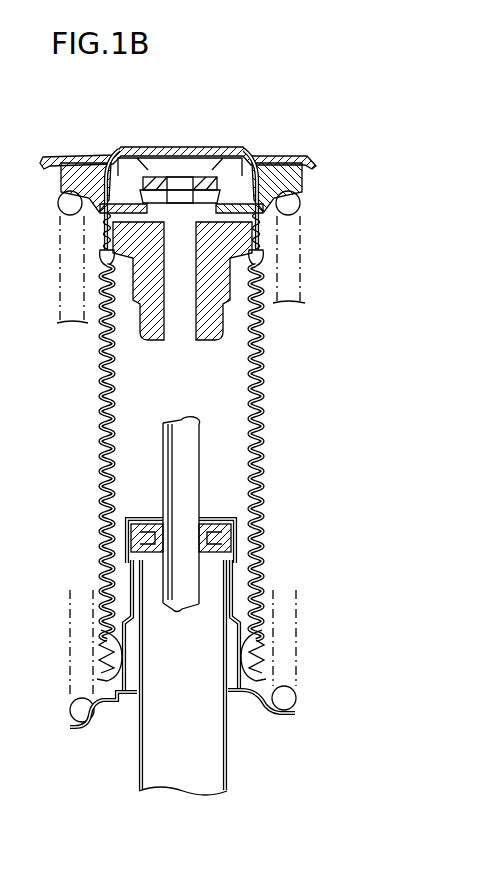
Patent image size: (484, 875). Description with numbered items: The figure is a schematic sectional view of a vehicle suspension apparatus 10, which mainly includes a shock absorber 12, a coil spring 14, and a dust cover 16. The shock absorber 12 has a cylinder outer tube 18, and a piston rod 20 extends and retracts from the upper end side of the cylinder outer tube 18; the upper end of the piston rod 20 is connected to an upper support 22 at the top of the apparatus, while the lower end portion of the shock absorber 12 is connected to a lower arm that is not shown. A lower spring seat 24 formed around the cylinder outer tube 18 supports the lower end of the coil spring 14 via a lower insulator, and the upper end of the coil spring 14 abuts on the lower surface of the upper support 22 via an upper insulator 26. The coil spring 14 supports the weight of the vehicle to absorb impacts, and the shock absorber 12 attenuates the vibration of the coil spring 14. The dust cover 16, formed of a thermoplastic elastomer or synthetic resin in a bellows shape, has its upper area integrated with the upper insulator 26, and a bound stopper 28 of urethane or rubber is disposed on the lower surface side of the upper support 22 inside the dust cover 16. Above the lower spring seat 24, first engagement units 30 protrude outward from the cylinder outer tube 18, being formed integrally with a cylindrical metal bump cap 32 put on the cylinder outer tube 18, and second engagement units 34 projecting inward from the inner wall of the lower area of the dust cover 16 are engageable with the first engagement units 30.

The vehicle suspension apparatus 10 is at (297, 133).
The shock absorber 12 is at (129, 770).
The coil spring 14 is at (293, 206).
The dust cover 16 is at (263, 380).
The cylinder outer tube 18 is at (229, 733).
The piston rod 20 is at (190, 466).
The upper support 22 is at (72, 158).
The lower spring seat 24 is at (286, 713).
The upper insulator 26 is at (280, 180).
The bound stopper 28 is at (232, 269).
The first engagement unit 30 is at (246, 630).
The bump cap 32 is at (238, 548).
The second engagement unit 34 is at (252, 677).